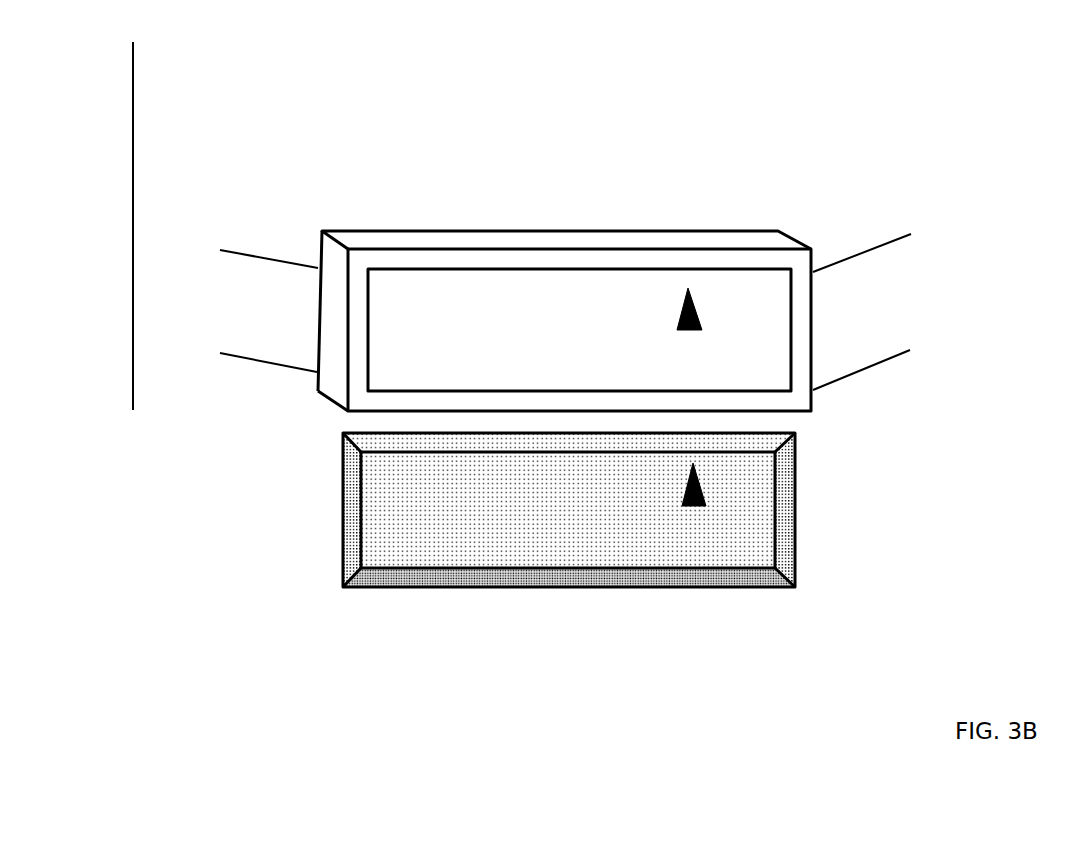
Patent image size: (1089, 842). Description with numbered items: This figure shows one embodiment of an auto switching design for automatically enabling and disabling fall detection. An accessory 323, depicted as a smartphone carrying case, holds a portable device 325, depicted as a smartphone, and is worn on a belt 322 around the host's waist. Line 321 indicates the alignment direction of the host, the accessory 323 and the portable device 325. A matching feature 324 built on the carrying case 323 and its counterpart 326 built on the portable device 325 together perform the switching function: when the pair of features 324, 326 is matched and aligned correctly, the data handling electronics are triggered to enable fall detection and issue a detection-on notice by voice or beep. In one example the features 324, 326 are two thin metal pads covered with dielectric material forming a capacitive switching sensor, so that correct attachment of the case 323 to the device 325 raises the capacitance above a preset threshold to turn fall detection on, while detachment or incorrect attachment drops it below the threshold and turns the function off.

The alignment line 321 is at (140, 117).
The belt 322 is at (873, 288).
The accessory 323 is at (562, 243).
The matching feature 324 is at (695, 307).
The portable device 325 is at (393, 506).
The counterpart matching feature 326 is at (703, 483).